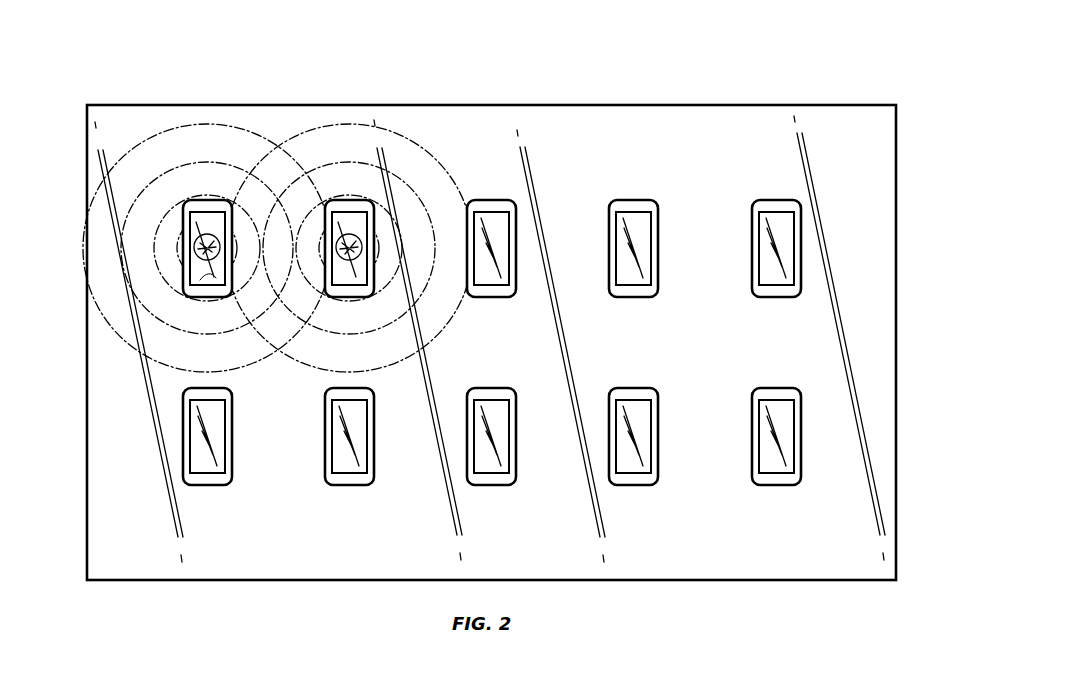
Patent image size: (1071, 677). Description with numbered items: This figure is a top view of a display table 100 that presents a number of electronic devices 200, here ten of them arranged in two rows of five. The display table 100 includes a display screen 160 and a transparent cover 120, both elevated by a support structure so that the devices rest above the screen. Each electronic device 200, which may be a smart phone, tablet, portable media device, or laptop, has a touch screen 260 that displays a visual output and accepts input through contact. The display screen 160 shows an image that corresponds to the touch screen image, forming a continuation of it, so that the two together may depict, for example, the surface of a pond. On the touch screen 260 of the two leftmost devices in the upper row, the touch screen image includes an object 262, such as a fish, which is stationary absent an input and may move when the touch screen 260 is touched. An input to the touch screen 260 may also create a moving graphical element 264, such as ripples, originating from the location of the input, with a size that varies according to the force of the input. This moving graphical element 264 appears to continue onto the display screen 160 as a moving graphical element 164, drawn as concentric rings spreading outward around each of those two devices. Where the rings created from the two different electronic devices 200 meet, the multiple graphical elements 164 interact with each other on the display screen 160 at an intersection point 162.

The display table 100 is at (838, 70).
The transparent cover 120 is at (680, 122).
The display screen 160 is at (873, 256).
The intersection point 162 is at (280, 350).
The moving graphical element 164 is at (173, 235).
The electronic device 200 is at (208, 287).
The touch screen 260 is at (208, 232).
The object 262 is at (195, 248).
The moving graphical element 264 is at (186, 281).